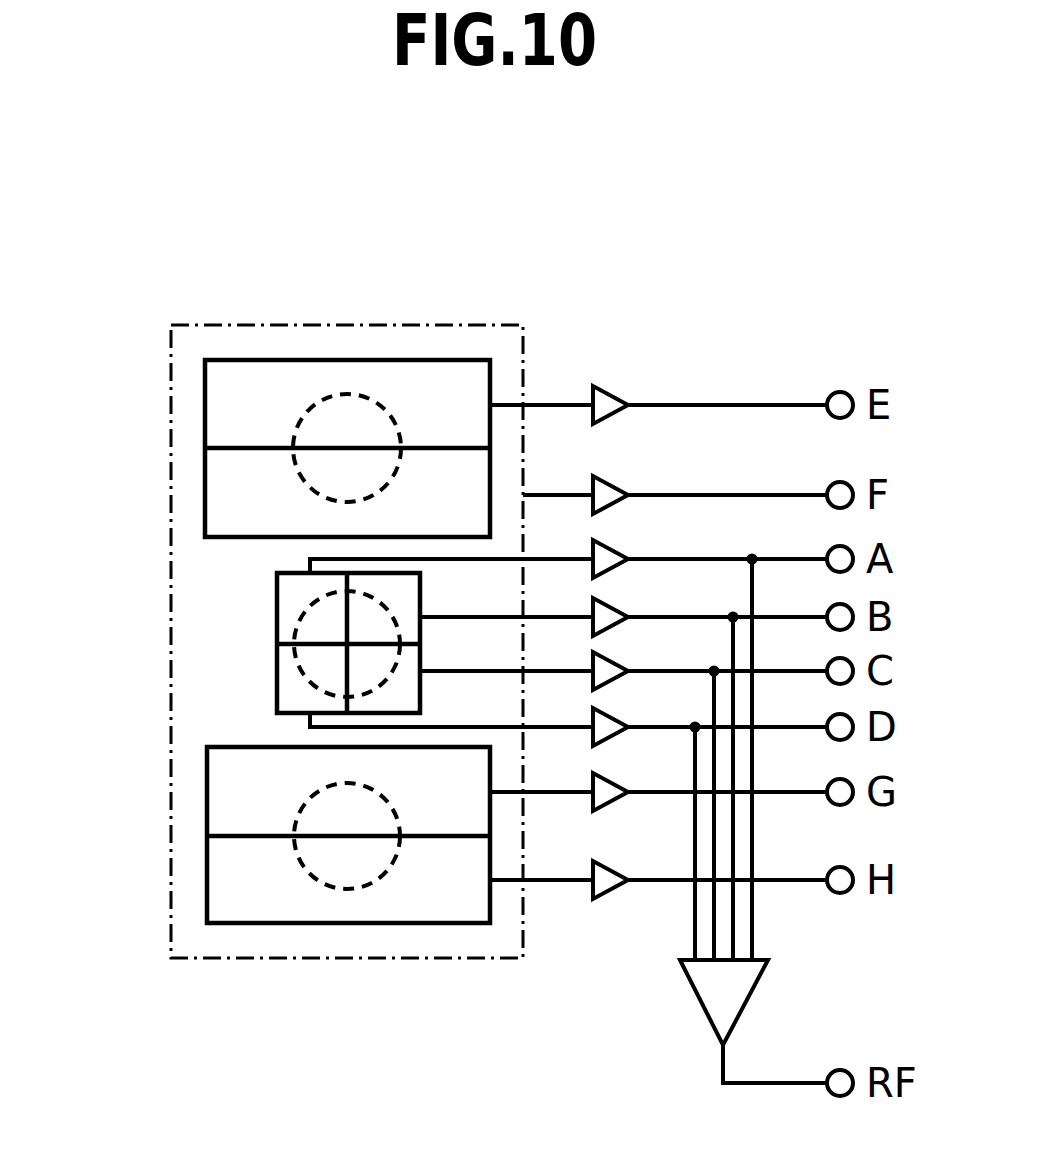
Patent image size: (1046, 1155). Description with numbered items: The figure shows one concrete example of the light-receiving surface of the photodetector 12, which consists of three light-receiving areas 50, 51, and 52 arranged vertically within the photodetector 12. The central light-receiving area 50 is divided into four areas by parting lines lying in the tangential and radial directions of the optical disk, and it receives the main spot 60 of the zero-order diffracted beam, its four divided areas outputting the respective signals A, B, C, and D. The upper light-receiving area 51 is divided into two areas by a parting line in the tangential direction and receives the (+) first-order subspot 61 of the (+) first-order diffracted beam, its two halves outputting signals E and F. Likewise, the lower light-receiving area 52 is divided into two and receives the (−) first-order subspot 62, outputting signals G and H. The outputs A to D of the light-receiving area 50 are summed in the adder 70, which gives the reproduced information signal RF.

The photodetector 12 is at (488, 340).
The light-receiving area 50 is at (287, 602).
The light-receiving area 51 is at (223, 403).
The light-receiving area 52 is at (223, 895).
The main spot 60 is at (323, 672).
The (+) first-order subspot 61 is at (357, 420).
The (−) first-order subspot 62 is at (348, 862).
The adder 70 is at (698, 1002).